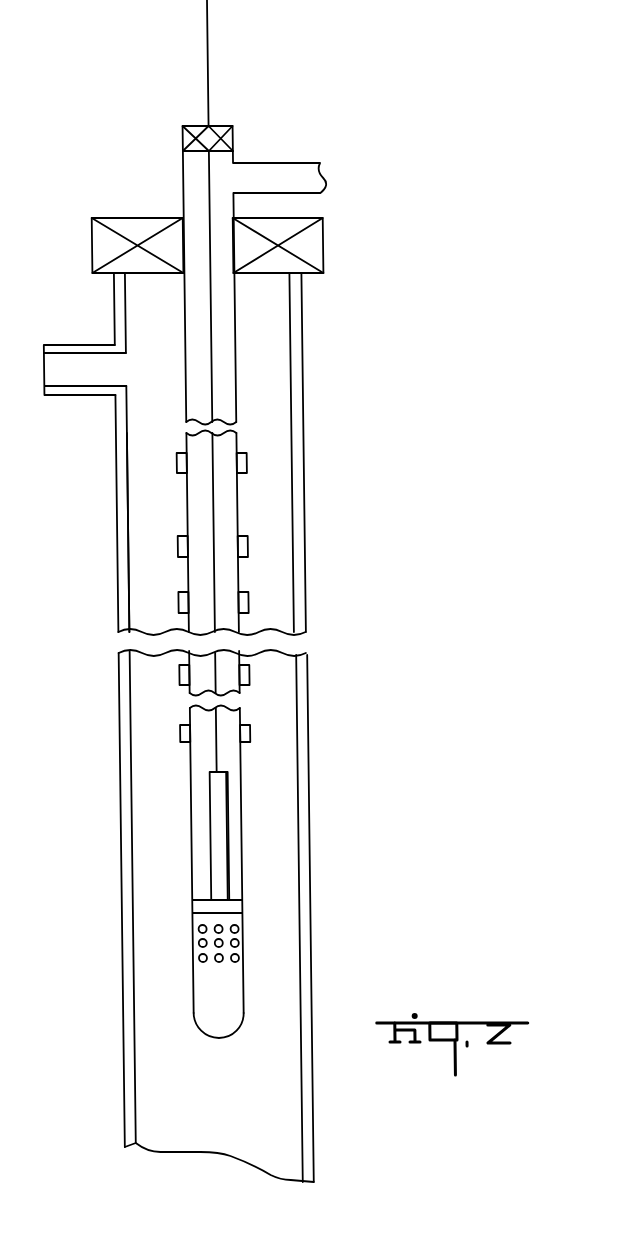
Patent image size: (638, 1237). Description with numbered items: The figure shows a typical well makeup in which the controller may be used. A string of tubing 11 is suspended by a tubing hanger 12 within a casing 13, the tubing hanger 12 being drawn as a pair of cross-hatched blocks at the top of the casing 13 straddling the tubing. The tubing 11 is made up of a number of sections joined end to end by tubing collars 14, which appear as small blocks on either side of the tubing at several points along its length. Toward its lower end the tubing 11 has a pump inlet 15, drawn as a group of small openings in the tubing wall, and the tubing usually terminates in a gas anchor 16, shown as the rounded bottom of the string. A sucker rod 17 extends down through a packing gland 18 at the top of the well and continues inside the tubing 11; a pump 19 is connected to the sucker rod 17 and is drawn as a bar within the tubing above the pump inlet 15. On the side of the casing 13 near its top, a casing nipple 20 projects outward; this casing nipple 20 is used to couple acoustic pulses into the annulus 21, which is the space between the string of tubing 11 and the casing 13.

The tubing 11 is at (224, 383).
The tubing hanger 12 is at (317, 257).
The casing 13 is at (298, 423).
The tubing collars 14 is at (241, 460).
The pump inlet 15 is at (227, 957).
The gas anchor 16 is at (209, 1022).
The sucker rod 17 is at (206, 326).
The packing gland 18 is at (231, 134).
The pump 19 is at (219, 813).
The casing nipple 20 is at (66, 395).
The annulus 21 is at (134, 457).